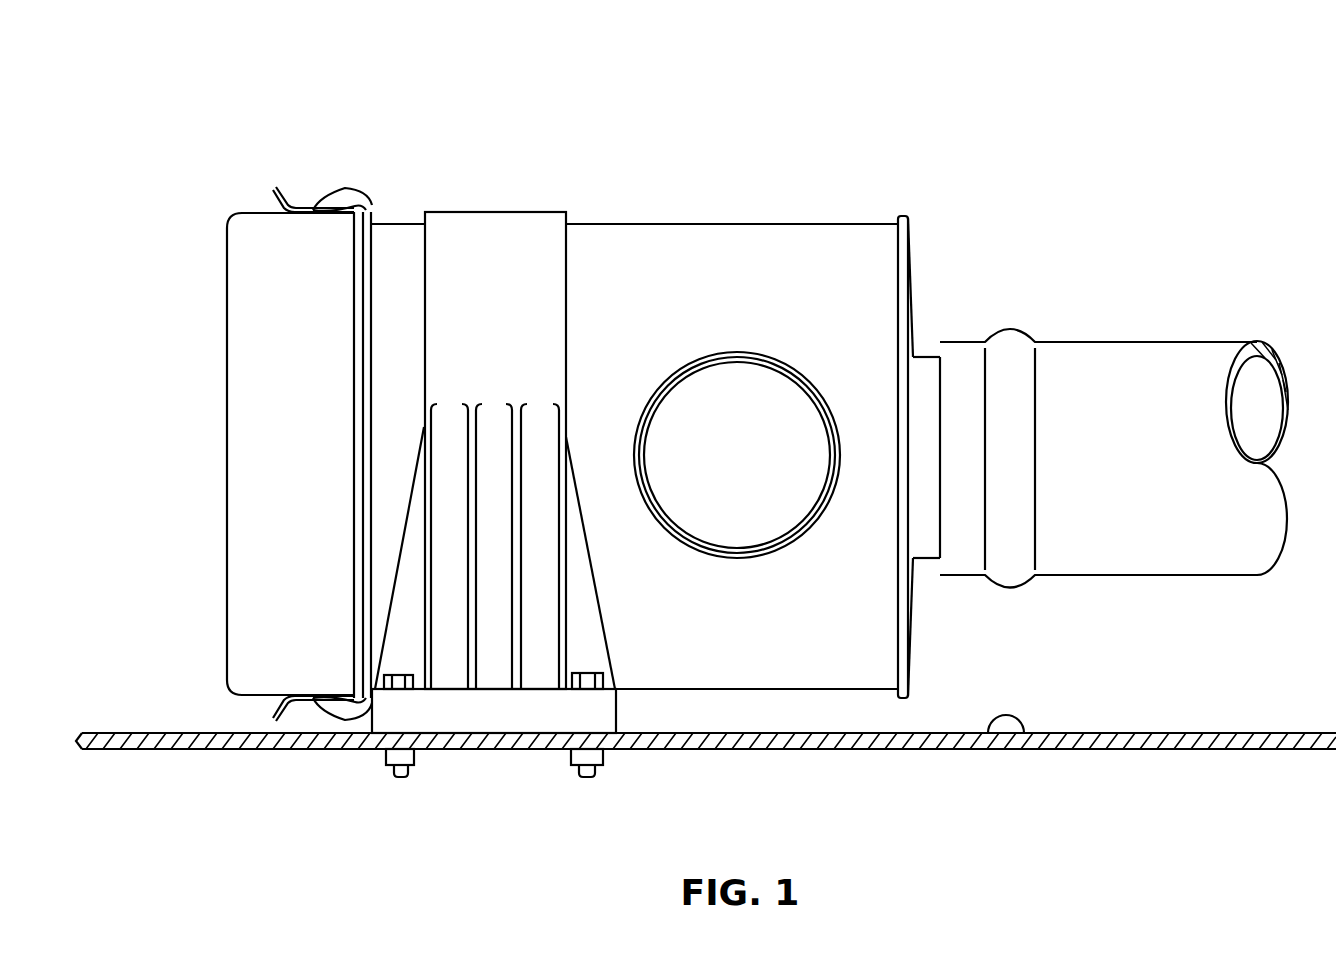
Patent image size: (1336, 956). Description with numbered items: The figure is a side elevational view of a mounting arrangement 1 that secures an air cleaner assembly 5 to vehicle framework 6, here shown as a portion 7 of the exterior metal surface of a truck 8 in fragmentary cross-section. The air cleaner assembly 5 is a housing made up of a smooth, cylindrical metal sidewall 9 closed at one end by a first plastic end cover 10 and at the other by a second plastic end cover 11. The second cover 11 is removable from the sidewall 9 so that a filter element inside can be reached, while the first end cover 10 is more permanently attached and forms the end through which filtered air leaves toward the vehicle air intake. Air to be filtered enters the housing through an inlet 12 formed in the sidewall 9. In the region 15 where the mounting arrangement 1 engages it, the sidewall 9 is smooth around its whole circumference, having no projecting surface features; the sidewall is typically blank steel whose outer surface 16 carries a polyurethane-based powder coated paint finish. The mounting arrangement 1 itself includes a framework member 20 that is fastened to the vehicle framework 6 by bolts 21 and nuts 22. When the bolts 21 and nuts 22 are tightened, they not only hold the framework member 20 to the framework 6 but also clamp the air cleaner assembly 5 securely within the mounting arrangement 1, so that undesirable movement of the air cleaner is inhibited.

The mounting arrangement 1 is at (462, 113).
The air cleaner assembly 5 is at (705, 225).
The framework 6 is at (1022, 733).
The portion of exterior metal surface 7 is at (1097, 735).
The truck 8 is at (1246, 745).
The metal sidewall 9 is at (832, 243).
The first plastic end cover 10 is at (913, 297).
The second plastic end cover 11 is at (227, 450).
The inlet 12 is at (800, 376).
The smooth region 15 is at (670, 313).
The outer surface 16 is at (477, 268).
The framework member 20 is at (405, 610).
The bolts 21 is at (400, 680).
The nuts 22 is at (400, 755).